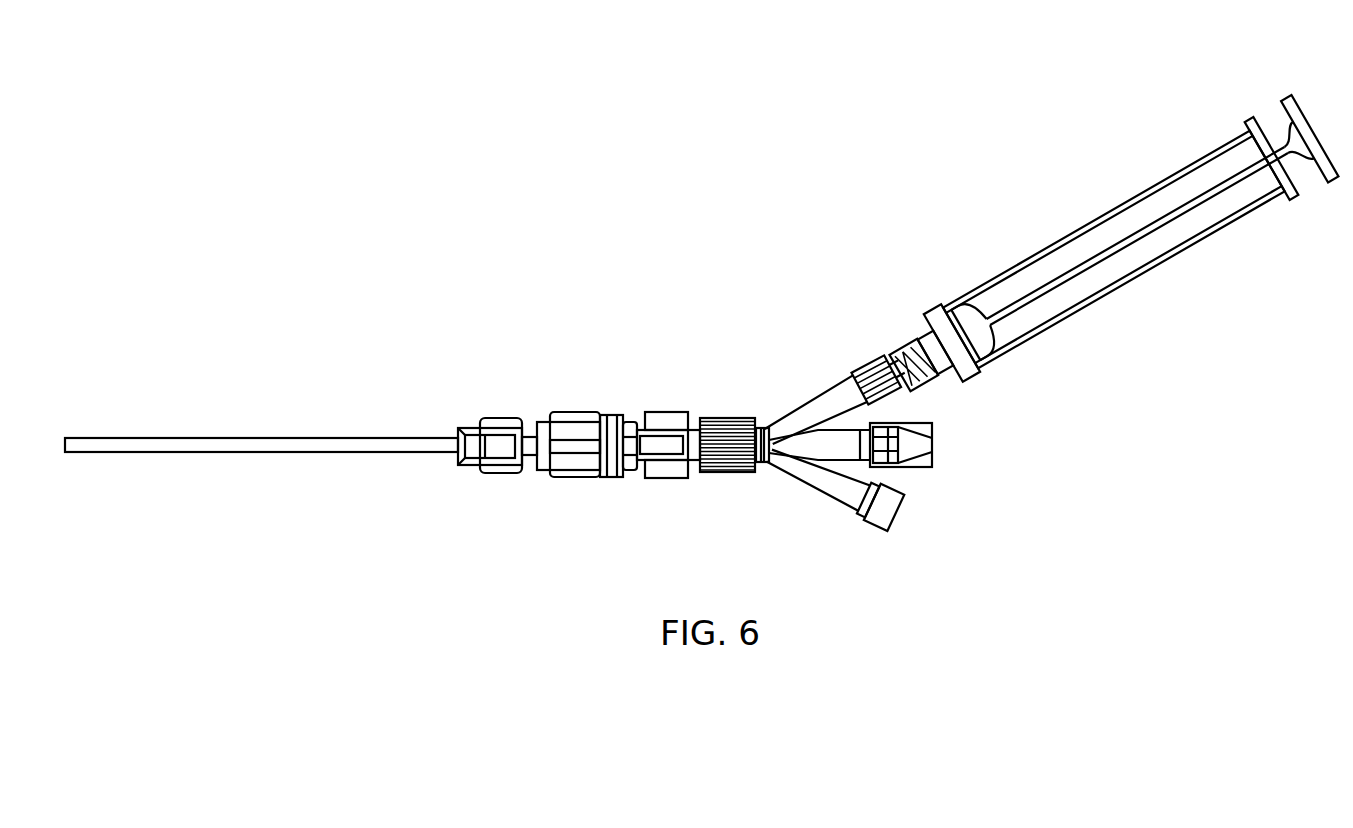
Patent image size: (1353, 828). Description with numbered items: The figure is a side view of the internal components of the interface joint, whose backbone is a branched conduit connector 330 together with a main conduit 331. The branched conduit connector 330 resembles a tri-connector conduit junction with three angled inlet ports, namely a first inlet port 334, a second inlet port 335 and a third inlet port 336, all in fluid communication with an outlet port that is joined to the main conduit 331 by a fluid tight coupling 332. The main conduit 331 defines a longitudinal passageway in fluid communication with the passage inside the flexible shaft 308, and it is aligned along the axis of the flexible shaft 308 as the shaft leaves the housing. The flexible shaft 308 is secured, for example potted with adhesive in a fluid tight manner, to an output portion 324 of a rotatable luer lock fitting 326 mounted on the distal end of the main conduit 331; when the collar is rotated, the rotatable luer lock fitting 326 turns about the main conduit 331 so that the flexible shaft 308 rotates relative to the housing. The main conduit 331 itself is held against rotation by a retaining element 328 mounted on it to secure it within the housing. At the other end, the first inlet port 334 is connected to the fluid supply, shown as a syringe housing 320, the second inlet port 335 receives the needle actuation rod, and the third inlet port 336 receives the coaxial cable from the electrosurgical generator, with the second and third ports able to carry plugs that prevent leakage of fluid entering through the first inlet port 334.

The flexible shaft 308 is at (295, 453).
The syringe housing 320 is at (1083, 252).
The output portion 324 is at (508, 420).
The rotatable luer lock fitting 326 is at (588, 425).
The retaining element 328 is at (675, 412).
The branched conduit connector 330 is at (796, 380).
The main conduit 331 is at (636, 470).
The fluid tight coupling 332 is at (738, 418).
The first inlet port 334 is at (845, 397).
The second inlet port 335 is at (895, 467).
The third inlet port 336 is at (830, 483).